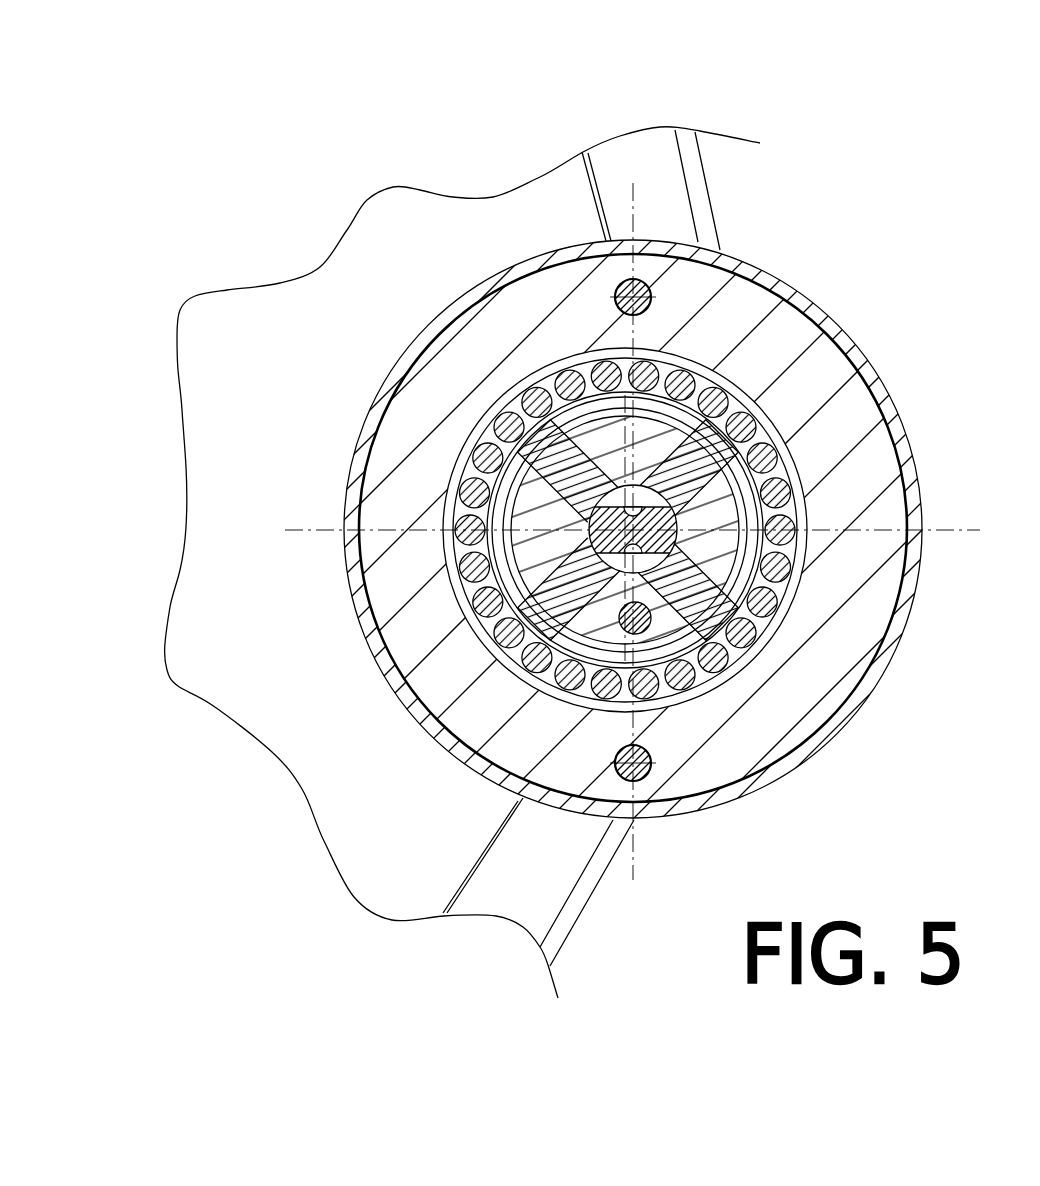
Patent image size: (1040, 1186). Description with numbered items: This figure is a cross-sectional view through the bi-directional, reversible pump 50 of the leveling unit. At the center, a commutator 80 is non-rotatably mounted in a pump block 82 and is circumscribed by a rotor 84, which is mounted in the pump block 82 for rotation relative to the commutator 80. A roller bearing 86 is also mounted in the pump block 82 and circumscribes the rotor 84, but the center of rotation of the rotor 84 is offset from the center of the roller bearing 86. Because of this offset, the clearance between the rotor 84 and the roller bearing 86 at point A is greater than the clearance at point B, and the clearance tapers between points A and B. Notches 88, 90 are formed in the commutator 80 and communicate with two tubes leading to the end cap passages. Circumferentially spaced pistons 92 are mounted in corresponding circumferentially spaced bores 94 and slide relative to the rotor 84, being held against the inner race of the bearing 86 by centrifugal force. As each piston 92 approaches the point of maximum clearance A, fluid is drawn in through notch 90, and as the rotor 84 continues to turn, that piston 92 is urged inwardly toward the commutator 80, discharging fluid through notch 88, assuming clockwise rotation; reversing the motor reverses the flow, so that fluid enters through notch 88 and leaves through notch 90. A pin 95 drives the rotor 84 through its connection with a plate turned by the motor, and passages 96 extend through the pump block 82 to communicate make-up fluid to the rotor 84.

The pump 50 is at (848, 279).
The commutator 80 is at (607, 543).
The pump block 82 is at (827, 383).
The rotor 84 is at (718, 462).
The roller bearing 86 is at (790, 545).
The notch 88 is at (638, 500).
The notch 90 is at (633, 556).
The pistons 92 is at (557, 433).
The bores 94 is at (588, 520).
The pin 95 is at (640, 767).
The passages 96 is at (643, 623).
The point of maximum clearance A is at (496, 526).
The point of minimum clearance B is at (732, 512).